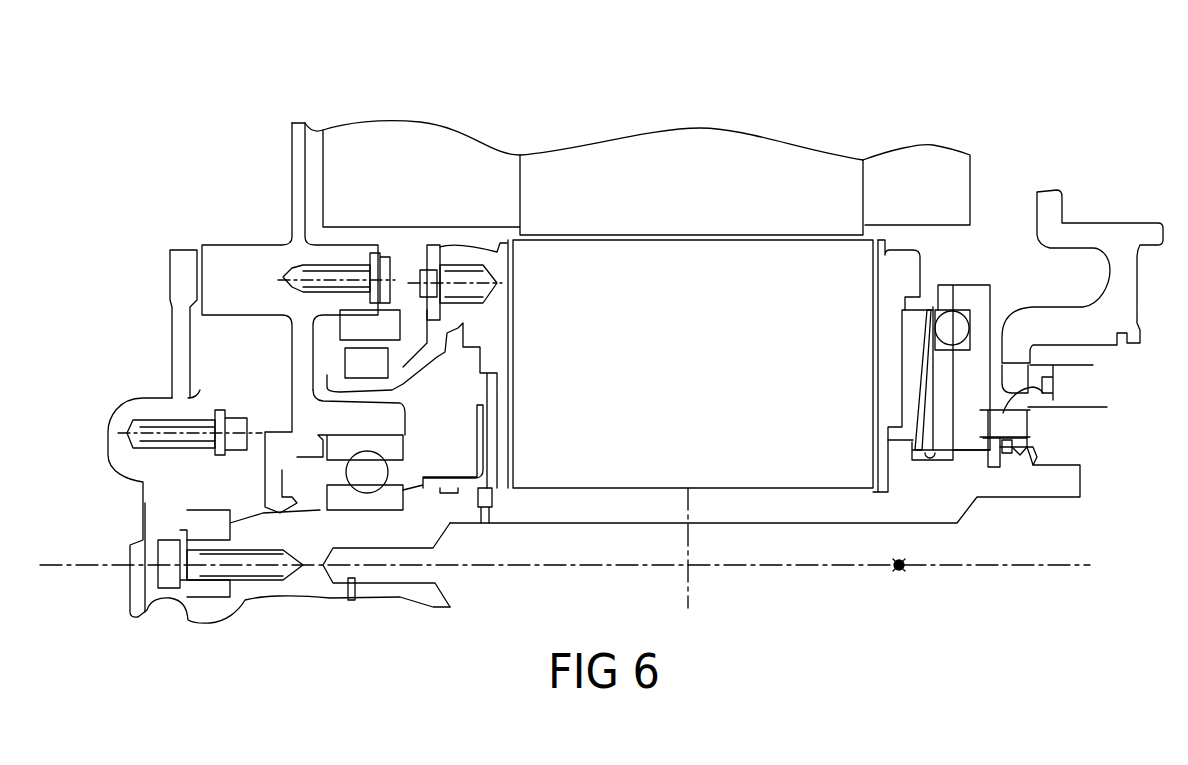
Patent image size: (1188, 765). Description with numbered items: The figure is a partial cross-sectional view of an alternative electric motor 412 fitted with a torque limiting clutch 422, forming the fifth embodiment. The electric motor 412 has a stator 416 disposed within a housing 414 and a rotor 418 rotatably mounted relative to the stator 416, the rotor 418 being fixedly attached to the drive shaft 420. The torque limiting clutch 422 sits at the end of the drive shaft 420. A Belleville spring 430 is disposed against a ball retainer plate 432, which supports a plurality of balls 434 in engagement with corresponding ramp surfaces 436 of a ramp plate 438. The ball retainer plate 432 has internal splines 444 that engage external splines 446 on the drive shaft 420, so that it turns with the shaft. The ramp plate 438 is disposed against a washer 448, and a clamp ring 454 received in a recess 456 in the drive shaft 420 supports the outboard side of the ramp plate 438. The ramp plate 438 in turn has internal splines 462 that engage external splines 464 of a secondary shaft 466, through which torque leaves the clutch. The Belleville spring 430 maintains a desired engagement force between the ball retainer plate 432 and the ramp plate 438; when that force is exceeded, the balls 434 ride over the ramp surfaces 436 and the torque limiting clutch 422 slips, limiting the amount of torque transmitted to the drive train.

The electric motor 412 is at (950, 112).
The housing 414 is at (297, 178).
The stator 416 is at (793, 167).
The rotor 418 is at (828, 258).
The drive shaft 420 is at (822, 508).
The torque limiting clutch 422 is at (975, 317).
The Belleville spring 430 is at (927, 357).
The ball retainer plate 432 is at (940, 403).
The balls 434 is at (947, 323).
The ramp surfaces 436 is at (945, 330).
The ramp plate 438 is at (937, 375).
The internal splines 444 is at (938, 458).
The external splines 446 is at (967, 457).
The washer 448 is at (1012, 442).
The clamp ring 454 is at (1010, 457).
The recess 456 is at (980, 450).
The internal splines 462 is at (1000, 415).
The external splines 464 is at (1055, 390).
The secondary shaft 466 is at (1057, 452).